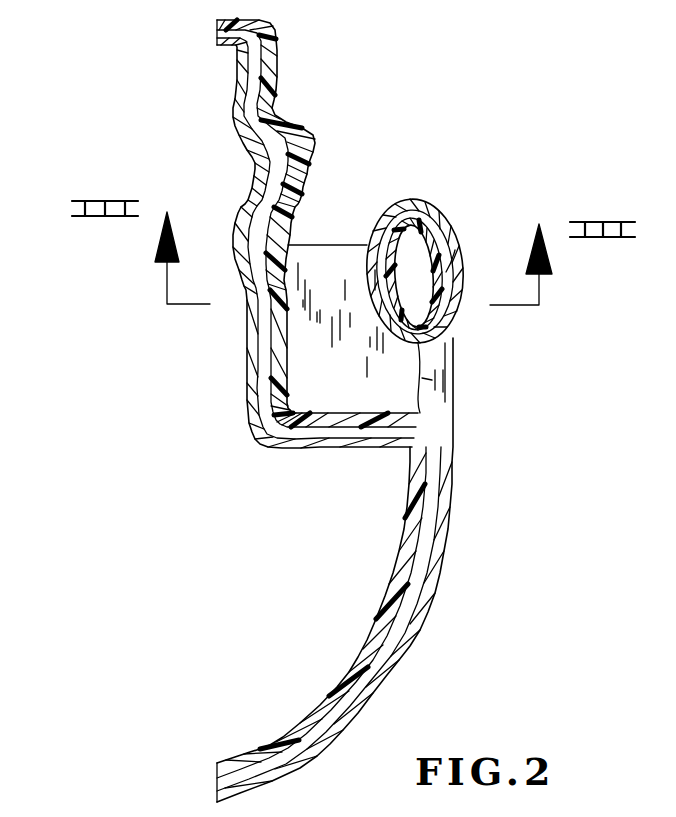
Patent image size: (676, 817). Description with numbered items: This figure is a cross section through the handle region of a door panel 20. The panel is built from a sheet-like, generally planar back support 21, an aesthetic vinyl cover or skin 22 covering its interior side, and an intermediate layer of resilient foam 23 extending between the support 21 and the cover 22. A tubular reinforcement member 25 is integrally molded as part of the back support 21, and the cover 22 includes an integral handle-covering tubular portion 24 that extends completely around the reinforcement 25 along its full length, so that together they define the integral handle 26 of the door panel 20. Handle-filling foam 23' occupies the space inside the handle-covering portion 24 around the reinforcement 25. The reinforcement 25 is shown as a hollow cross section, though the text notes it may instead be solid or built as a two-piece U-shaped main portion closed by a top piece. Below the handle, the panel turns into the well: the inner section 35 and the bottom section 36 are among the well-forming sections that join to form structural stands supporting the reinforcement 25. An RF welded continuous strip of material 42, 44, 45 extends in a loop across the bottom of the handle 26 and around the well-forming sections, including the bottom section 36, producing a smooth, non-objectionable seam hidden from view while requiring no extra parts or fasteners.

The door panel 20 is at (426, 418).
The back support 21 is at (238, 421).
The cover 22 is at (462, 554).
The foam 23 is at (306, 413).
The handle-filling foam 23' is at (485, 217).
The handle-covering tubular portion 24 is at (452, 199).
The reinforcement member 25 is at (399, 199).
The handle 26 is at (374, 189).
The inner section 35 is at (288, 313).
The bottom section 36 is at (352, 413).
The RF welded strip of material 42 is at (444, 352).
The RF welded strip of material 44 is at (421, 410).
The RF welded strip of material 45 is at (428, 380).